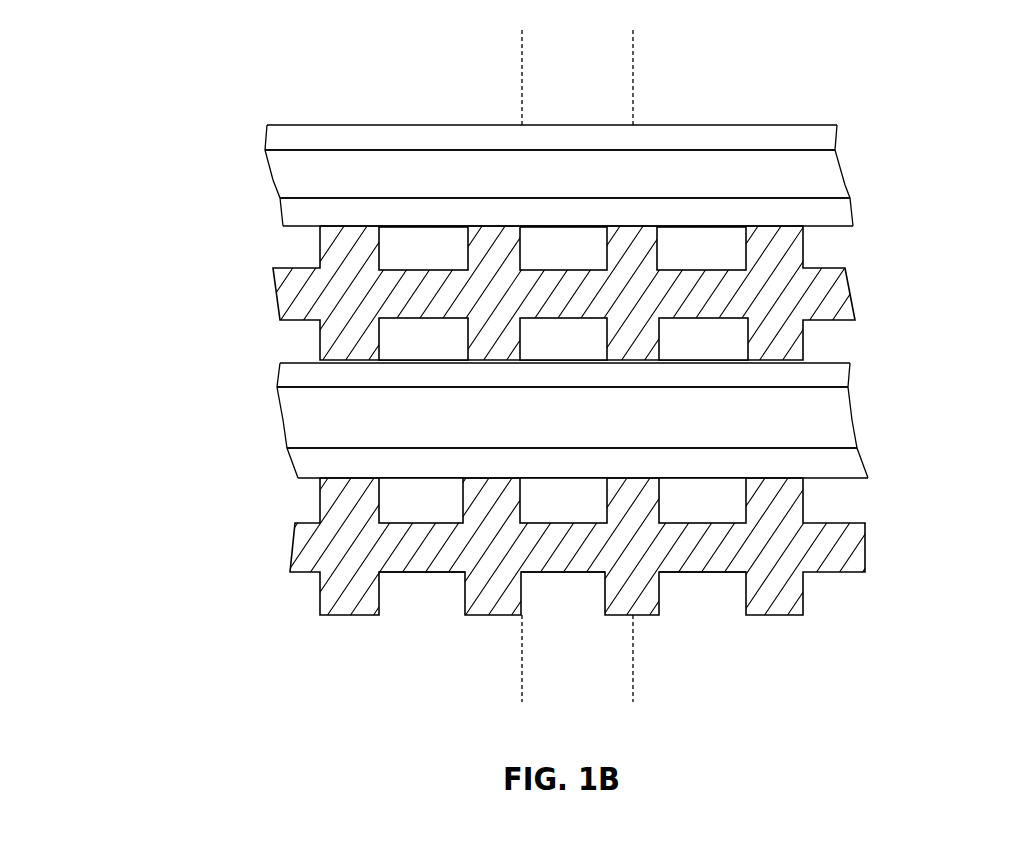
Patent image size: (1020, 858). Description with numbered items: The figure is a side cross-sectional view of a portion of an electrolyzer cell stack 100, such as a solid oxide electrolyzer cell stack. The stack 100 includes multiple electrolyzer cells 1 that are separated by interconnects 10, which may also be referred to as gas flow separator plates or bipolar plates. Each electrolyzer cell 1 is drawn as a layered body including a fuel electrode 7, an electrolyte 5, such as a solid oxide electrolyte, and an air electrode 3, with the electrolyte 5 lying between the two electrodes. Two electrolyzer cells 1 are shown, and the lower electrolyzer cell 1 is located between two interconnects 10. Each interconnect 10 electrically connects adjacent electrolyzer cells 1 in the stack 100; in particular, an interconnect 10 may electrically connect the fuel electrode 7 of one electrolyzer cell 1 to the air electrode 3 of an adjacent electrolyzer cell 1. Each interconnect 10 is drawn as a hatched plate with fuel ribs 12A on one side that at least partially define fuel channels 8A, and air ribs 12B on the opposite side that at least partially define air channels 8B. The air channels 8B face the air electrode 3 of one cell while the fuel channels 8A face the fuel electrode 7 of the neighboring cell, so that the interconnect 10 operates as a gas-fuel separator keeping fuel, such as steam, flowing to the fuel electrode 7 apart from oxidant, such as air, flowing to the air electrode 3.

The electrolyzer cell stack 100 is at (151, 128).
The electrolyzer cell 1 is at (872, 123).
The fuel electrode 7 is at (267, 137).
The electrolyte 5 is at (266, 176).
The air electrode 3 is at (284, 217).
The interconnect 10 is at (872, 243).
The air ribs 12B is at (345, 243).
The fuel ribs 12A is at (348, 330).
The air channels 8B is at (406, 265).
The fuel channels 8A is at (406, 357).